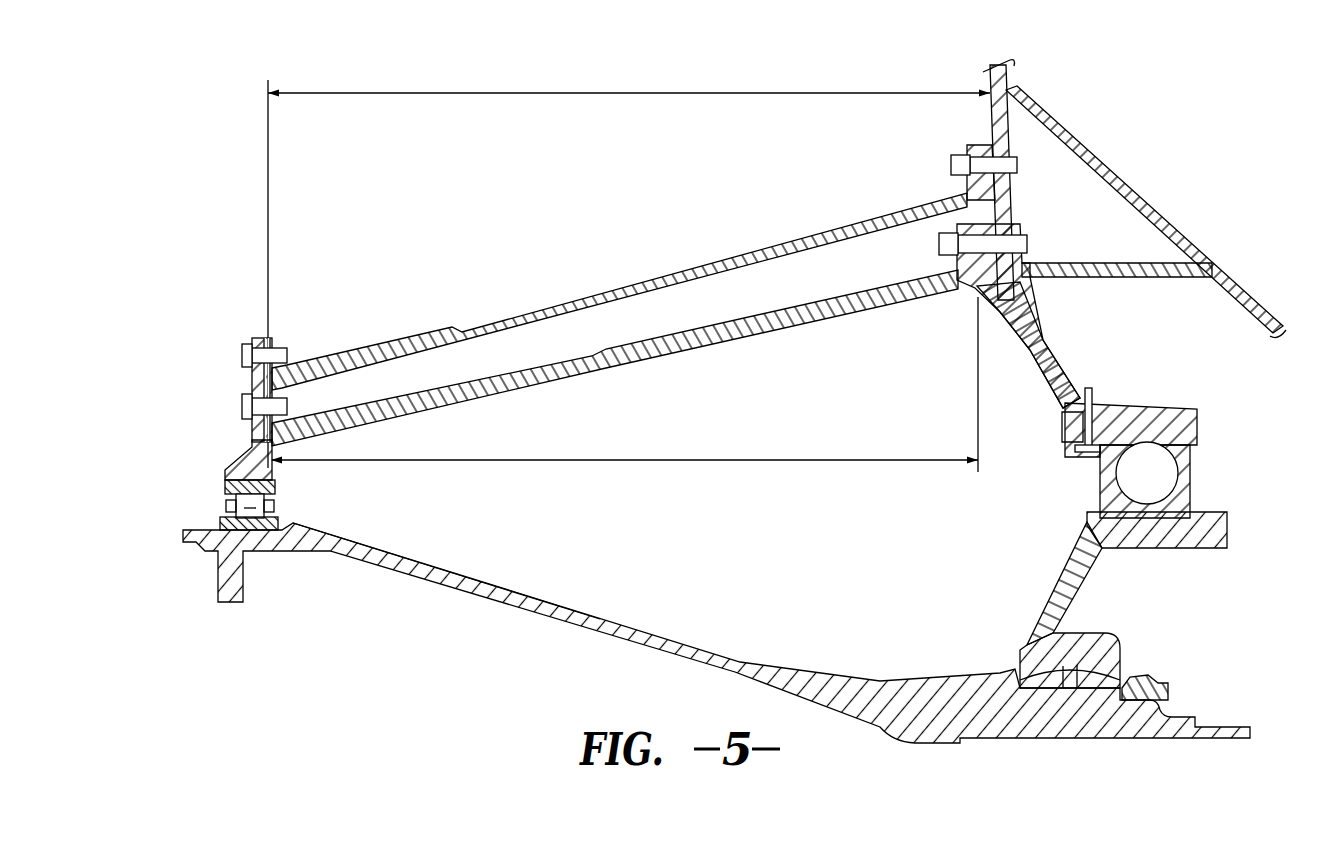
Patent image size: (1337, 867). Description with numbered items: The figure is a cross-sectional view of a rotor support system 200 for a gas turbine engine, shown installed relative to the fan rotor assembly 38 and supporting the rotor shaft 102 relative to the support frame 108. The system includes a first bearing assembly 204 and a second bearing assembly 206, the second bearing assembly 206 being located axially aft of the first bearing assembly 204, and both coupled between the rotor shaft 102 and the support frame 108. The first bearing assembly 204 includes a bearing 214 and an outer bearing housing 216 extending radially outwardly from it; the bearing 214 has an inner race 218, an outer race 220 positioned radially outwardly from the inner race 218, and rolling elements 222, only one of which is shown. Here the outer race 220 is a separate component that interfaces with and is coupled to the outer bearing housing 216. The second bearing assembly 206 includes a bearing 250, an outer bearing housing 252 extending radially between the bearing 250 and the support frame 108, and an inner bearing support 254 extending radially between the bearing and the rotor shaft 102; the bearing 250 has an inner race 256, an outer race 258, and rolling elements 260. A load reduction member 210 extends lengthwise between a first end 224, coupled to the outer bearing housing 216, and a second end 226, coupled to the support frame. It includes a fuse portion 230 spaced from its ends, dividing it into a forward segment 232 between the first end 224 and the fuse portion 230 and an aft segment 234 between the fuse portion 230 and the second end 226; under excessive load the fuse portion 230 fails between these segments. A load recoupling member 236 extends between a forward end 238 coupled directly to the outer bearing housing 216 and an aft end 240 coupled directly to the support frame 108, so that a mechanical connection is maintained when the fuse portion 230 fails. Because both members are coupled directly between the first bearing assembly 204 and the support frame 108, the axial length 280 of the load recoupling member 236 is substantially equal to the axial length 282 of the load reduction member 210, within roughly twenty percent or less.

The fan rotor assembly 38 is at (440, 630).
The rotor shaft 102 is at (562, 620).
The support frame 108 is at (1097, 163).
The rotor support system 200 is at (236, 154).
The first bearing assembly 204 is at (279, 408).
The second bearing assembly 206 is at (1091, 374).
The load reduction member 210 is at (619, 313).
The bearing 214 is at (280, 500).
The outer bearing housing 216 is at (236, 444).
The inner race 218 is at (221, 521).
The outer race 220 is at (228, 477).
The rolling elements 222 is at (226, 496).
The first end 224 is at (287, 411).
The second end 226 is at (969, 291).
The fuse portion 230 is at (615, 358).
The forward segment 232 is at (440, 405).
The aft segment 234 is at (619, 285).
The load recoupling member 236 is at (727, 236).
The forward end 238 is at (283, 346).
The aft end 240 is at (986, 149).
The bearing 250 is at (1170, 453).
The outer bearing housing 252 is at (1064, 372).
The inner bearing support 254 is at (1036, 617).
The inner race 256 is at (1186, 503).
The outer race 258 is at (1182, 446).
The rolling elements 260 is at (1165, 488).
The axial length 280 is at (650, 91).
The axial length 282 is at (668, 463).